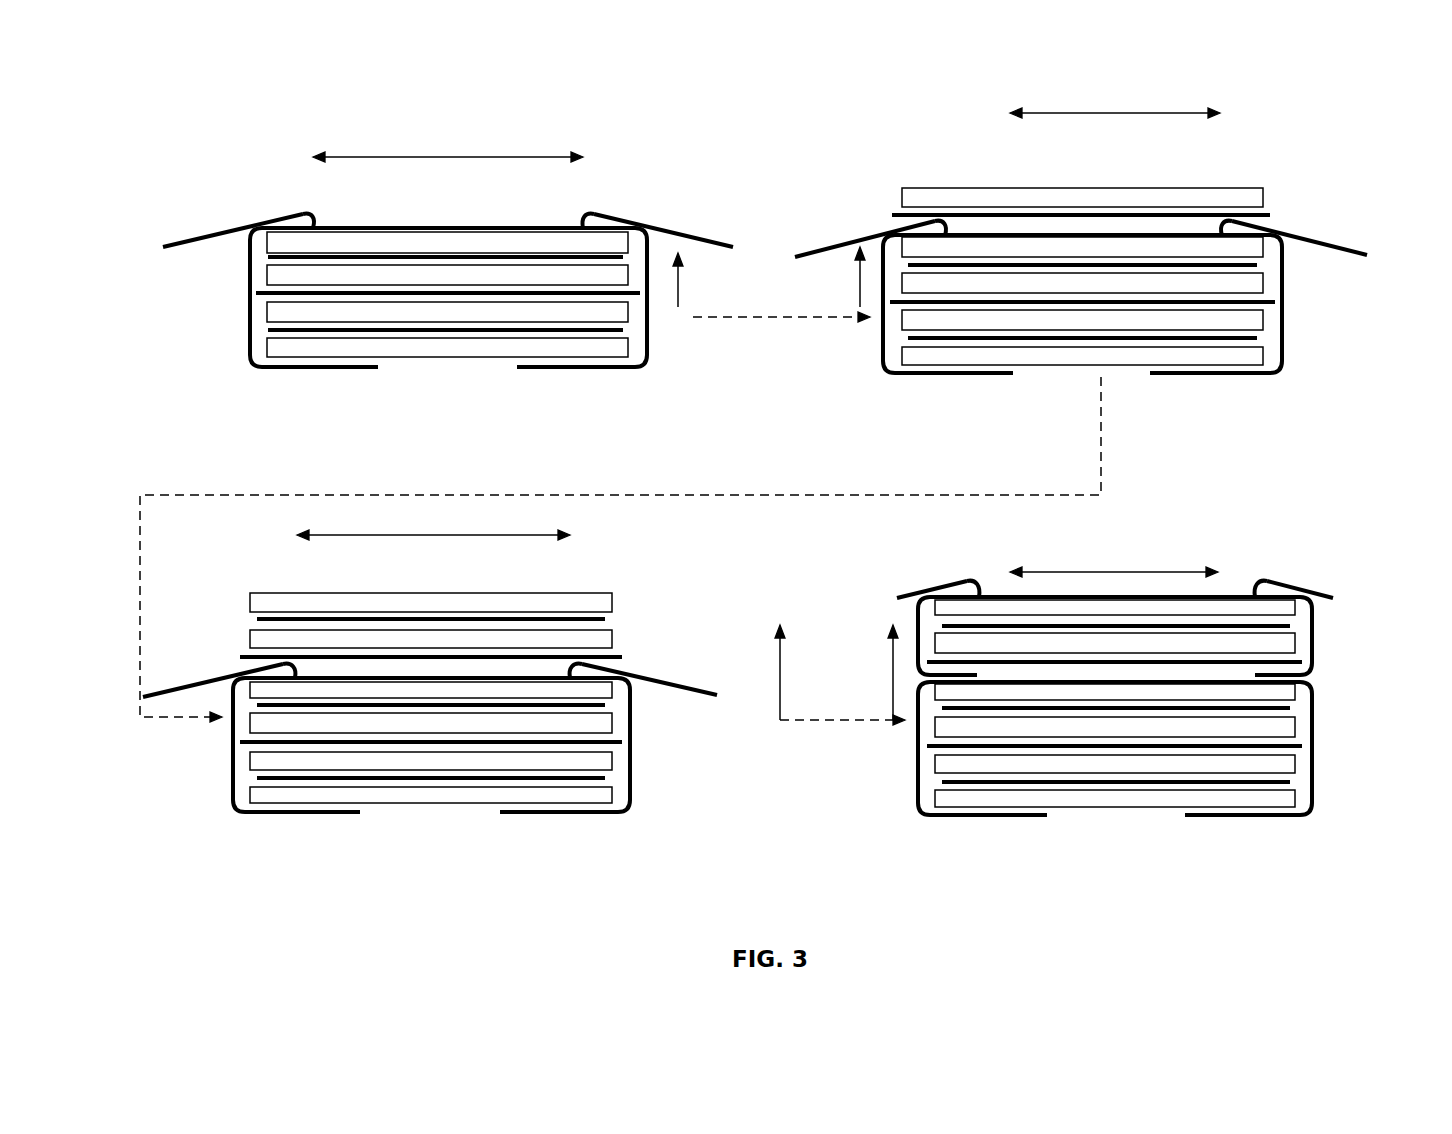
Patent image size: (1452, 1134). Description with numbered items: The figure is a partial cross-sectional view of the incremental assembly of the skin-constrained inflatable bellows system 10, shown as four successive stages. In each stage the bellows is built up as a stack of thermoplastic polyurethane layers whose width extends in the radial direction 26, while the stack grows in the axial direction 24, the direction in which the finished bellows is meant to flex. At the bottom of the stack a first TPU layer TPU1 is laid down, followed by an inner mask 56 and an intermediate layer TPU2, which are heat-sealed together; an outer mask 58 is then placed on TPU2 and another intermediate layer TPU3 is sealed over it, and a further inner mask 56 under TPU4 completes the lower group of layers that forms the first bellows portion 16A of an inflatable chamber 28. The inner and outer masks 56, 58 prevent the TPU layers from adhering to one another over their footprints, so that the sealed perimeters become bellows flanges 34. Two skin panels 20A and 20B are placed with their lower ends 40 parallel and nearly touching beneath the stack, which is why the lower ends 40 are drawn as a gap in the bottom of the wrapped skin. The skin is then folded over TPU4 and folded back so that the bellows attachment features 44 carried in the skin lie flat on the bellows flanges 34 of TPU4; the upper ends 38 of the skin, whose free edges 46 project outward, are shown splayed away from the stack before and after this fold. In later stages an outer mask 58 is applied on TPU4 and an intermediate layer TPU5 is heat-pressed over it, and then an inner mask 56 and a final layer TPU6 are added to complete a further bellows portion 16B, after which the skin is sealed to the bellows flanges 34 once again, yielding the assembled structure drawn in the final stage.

The skin-constrained inflatable bellows system 10 is at (121, 824).
The first bellows portion 16A is at (634, 331).
The further bellows portion 16B is at (1276, 194).
The skin panel 20A is at (240, 222).
The skin panel 20B is at (684, 231).
The axial direction 24 is at (680, 288).
The radial direction 26 is at (450, 157).
The inflatable chamber 28 is at (773, 518).
The bellows flange 34 is at (777, 408).
The upper end 38 is at (787, 439).
The lower end 40 is at (378, 367).
The bellows attachment feature 44 is at (314, 222).
The free edge 46 is at (166, 245).
The inner mask 56 is at (268, 257).
The outer mask 58 is at (262, 293).
The first TPU layer TPU1 is at (268, 347).
The intermediate TPU layer TPU2 is at (268, 312).
The intermediate TPU layer TPU3 is at (268, 275).
The intermediate TPU layer TPU4 is at (268, 241).
The intermediate TPU layer TPU5 is at (1070, 188).
The intermediate TPU layer TPU6 is at (612, 600).